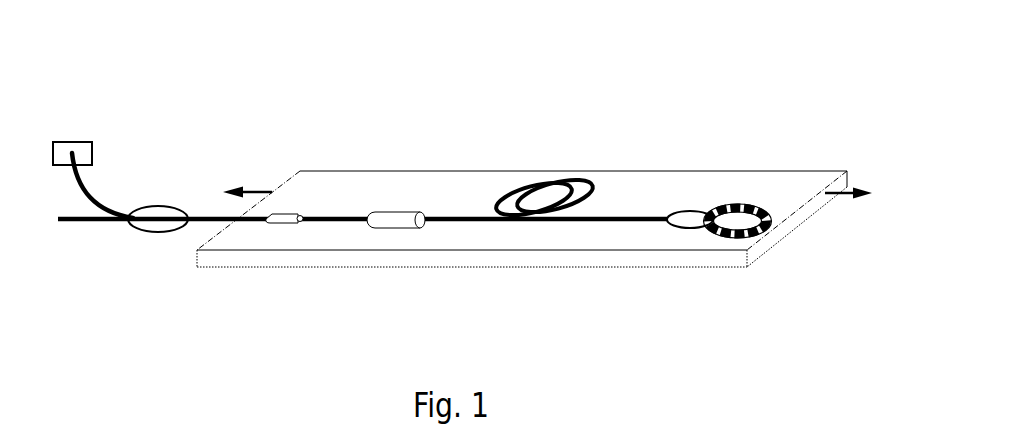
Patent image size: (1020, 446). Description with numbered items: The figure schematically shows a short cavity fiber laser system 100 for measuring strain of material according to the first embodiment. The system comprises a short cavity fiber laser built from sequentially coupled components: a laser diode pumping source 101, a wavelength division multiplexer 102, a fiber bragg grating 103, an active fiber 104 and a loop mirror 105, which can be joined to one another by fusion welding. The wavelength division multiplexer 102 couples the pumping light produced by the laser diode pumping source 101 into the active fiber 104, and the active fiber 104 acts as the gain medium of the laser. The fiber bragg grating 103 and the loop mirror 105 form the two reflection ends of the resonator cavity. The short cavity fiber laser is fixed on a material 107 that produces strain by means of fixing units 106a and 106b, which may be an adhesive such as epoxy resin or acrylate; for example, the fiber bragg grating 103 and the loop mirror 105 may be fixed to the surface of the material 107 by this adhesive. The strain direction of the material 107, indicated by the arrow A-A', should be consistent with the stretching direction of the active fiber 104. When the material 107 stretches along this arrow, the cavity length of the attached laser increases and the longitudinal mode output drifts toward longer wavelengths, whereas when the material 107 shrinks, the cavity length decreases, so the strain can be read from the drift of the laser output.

The short cavity fiber laser system 100 is at (694, 41).
The laser diode pumping source 101 is at (87, 142).
The wavelength division multiplexer 102 is at (141, 232).
The fiber bragg grating 103 is at (397, 212).
The active fiber 104 is at (550, 177).
The loop mirror 105 is at (694, 211).
The fixing unit 106a is at (292, 220).
The fixing unit 106b is at (742, 206).
The material 107 is at (306, 193).